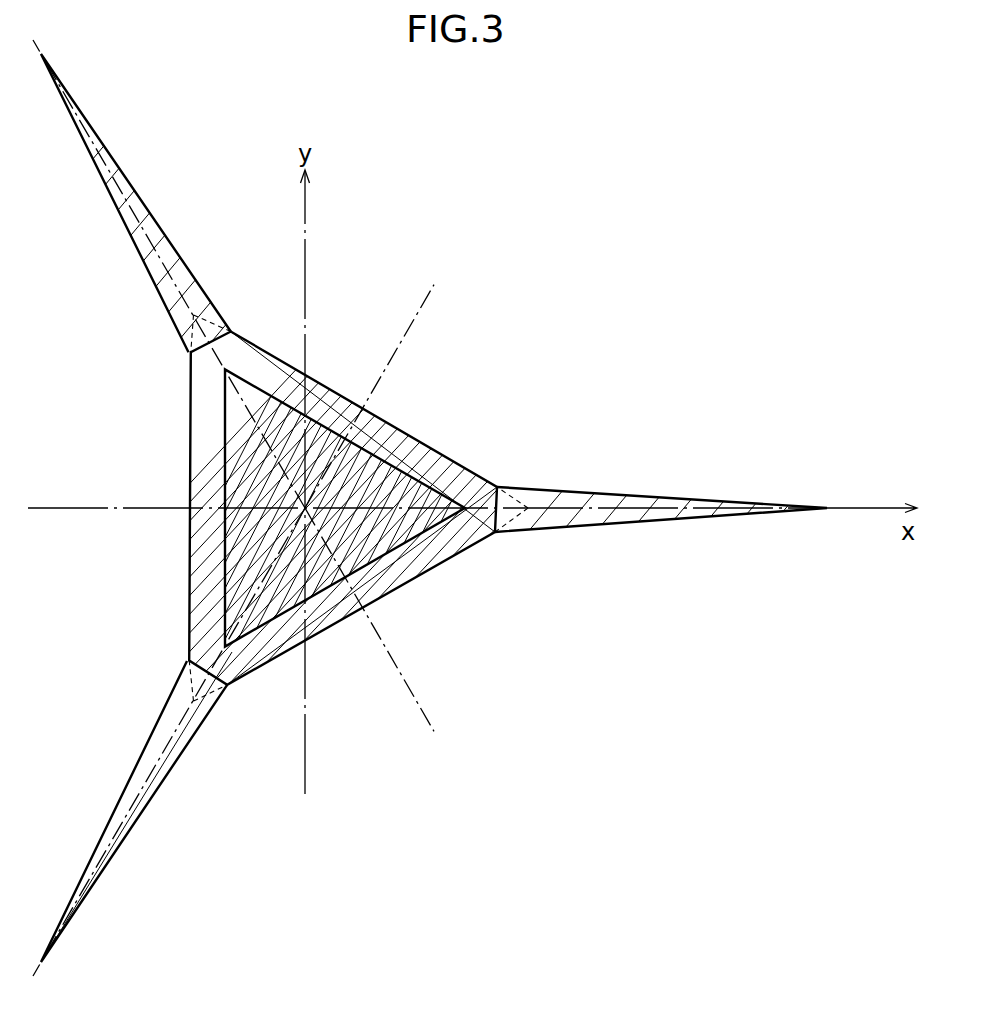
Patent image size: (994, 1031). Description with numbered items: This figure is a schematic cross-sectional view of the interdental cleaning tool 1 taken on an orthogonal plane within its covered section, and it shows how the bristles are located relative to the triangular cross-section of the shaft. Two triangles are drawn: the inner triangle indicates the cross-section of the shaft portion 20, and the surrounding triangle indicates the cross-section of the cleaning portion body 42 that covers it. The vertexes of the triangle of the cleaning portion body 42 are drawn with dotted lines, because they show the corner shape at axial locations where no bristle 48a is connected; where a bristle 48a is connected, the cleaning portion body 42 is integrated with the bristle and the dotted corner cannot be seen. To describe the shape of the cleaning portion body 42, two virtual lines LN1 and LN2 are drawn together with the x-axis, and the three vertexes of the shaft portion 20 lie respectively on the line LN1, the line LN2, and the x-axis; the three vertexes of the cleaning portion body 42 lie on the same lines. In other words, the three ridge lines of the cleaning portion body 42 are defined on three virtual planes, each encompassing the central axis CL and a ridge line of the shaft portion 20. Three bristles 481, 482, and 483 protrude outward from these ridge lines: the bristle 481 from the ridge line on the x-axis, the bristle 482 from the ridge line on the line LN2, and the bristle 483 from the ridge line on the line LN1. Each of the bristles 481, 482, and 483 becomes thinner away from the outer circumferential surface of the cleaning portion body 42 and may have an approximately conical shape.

The interdental cleaning tool 1 is at (550, 204).
The shaft portion 20 is at (405, 528).
The cleaning portion body 42 is at (437, 452).
The bristle 48a is at (413, 508).
The bristle 481 is at (590, 494).
The bristle 482 is at (148, 222).
The bristle 483 is at (118, 833).
The central axis CL is at (392, 594).
The virtual line LN1 is at (428, 309).
The virtual line LN2 is at (433, 723).